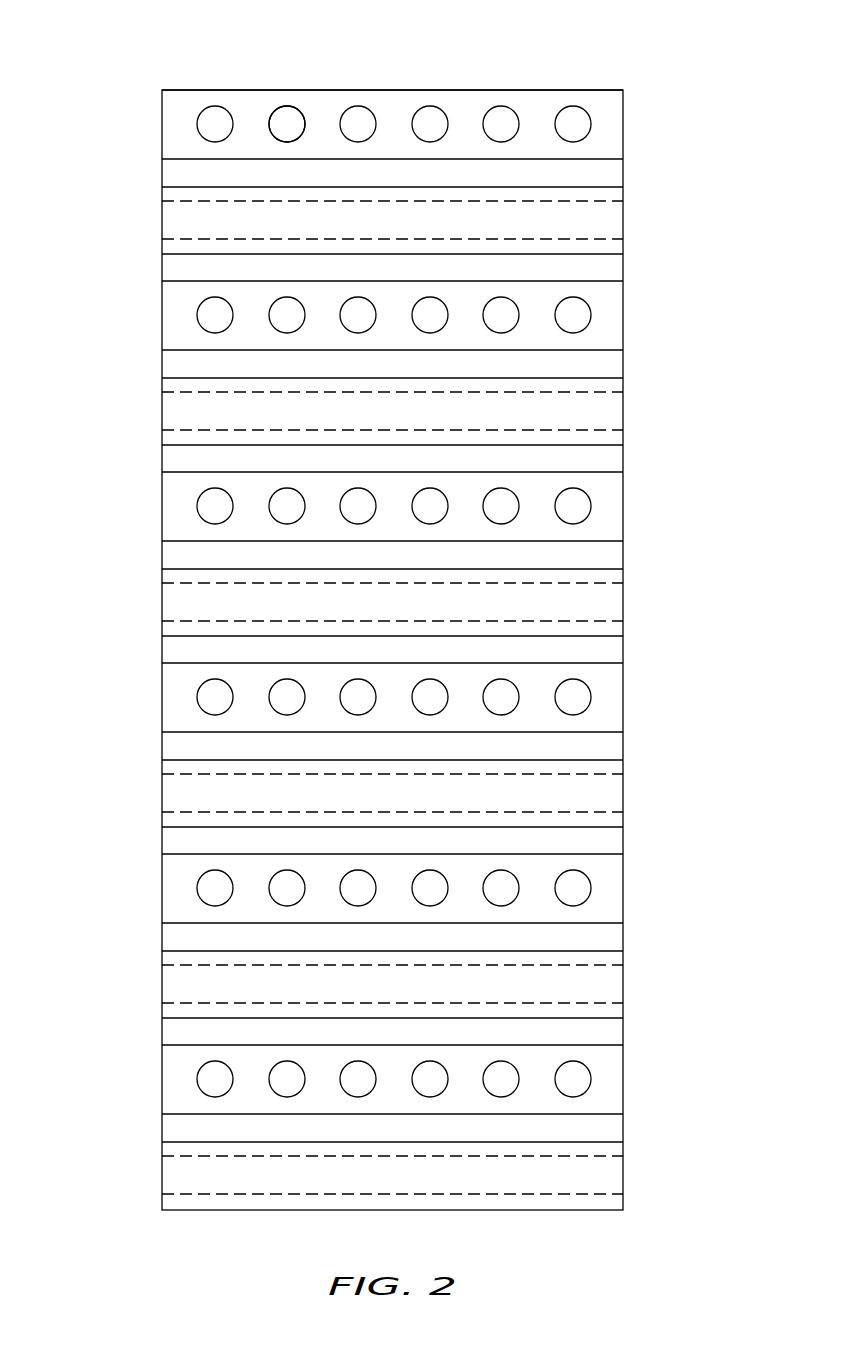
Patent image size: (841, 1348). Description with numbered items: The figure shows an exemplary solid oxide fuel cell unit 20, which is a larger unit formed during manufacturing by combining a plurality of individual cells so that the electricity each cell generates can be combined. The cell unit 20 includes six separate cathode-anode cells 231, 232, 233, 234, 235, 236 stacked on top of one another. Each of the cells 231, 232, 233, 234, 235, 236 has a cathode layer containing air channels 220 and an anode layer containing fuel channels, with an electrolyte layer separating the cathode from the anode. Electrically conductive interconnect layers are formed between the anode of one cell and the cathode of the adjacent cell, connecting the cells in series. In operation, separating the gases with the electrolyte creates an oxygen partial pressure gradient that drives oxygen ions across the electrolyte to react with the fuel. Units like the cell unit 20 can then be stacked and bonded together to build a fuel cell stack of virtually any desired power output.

The solid oxide fuel cell unit 20 is at (113, 43).
The air channels 220 is at (288, 115).
The cell 231 is at (147, 92).
The cell 232 is at (147, 283).
The cell 233 is at (147, 474).
The cell 234 is at (147, 665).
The cell 235 is at (147, 856).
The cell 236 is at (147, 1047).